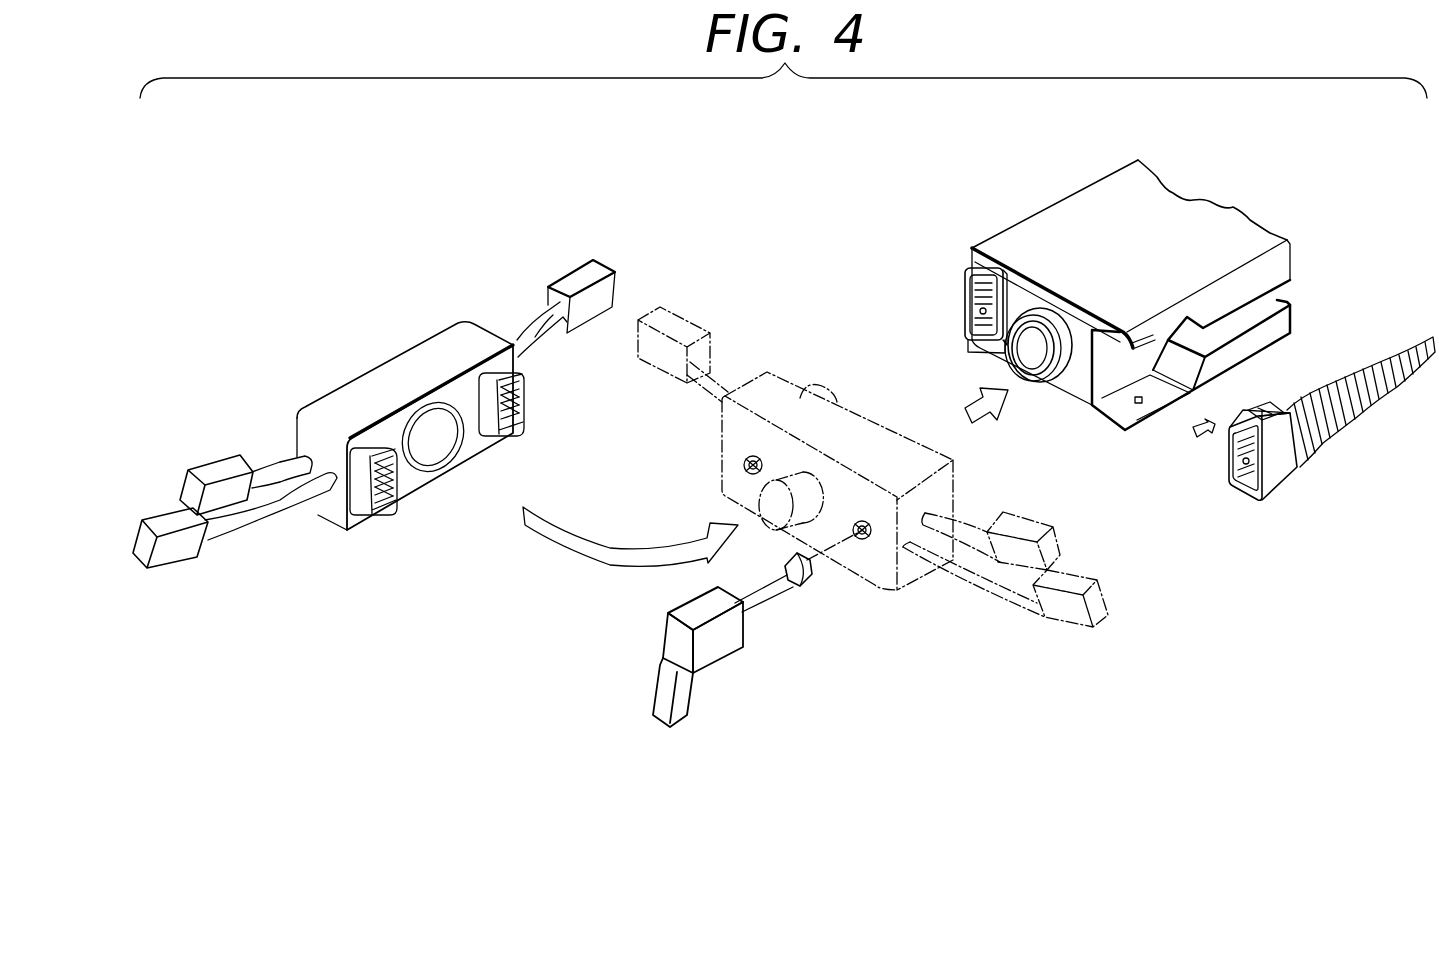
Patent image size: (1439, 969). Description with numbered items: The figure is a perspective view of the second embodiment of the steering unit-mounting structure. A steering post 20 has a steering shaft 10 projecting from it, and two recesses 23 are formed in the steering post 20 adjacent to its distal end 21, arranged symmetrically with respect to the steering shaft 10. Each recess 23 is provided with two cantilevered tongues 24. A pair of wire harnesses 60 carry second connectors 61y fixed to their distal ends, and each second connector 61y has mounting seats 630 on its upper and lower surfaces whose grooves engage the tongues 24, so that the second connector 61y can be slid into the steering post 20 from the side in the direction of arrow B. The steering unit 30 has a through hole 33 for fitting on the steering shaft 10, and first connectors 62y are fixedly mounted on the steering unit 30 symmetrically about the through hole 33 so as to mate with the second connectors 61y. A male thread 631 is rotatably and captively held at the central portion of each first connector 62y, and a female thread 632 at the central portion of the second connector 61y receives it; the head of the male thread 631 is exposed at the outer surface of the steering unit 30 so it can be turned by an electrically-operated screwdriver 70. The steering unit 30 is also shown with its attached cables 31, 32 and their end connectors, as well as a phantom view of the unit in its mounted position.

The steering shaft 10 is at (1033, 380).
The steering post 20 is at (1131, 302).
The distal end 21 is at (1020, 287).
The recess 23 is at (1169, 396).
The tongue 24 is at (1155, 405).
The steering unit 30 is at (620, 467).
The cables 31 is at (260, 520).
The cable 32 is at (540, 335).
The through hole 33 is at (423, 457).
The wire harness 60 is at (1373, 395).
The second connector 61y is at (1117, 401).
The first connector 62y is at (360, 500).
The electrically-operated screwdriver 70 is at (722, 635).
The mounting seat 630 is at (1268, 400).
The male thread 631 is at (858, 547).
The female thread 632 is at (1245, 465).
The arrow B is at (1205, 437).